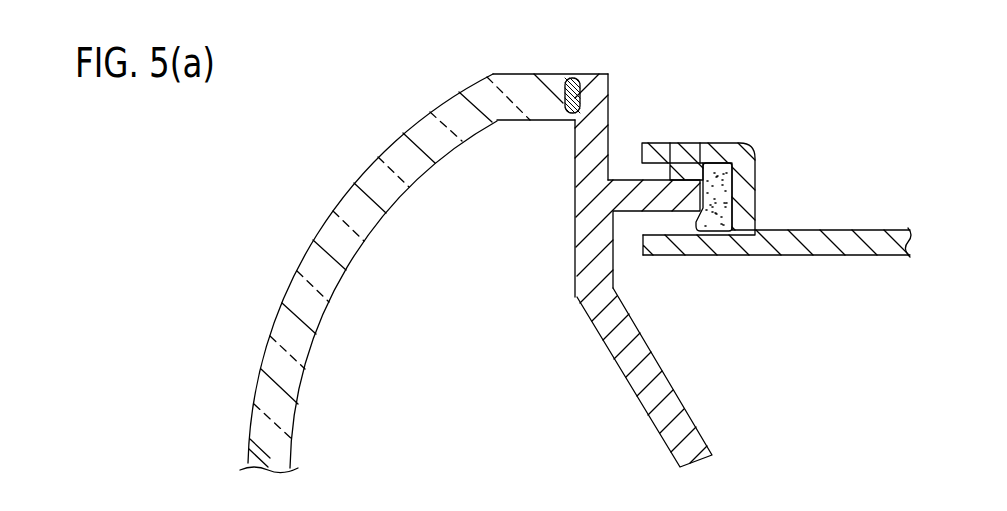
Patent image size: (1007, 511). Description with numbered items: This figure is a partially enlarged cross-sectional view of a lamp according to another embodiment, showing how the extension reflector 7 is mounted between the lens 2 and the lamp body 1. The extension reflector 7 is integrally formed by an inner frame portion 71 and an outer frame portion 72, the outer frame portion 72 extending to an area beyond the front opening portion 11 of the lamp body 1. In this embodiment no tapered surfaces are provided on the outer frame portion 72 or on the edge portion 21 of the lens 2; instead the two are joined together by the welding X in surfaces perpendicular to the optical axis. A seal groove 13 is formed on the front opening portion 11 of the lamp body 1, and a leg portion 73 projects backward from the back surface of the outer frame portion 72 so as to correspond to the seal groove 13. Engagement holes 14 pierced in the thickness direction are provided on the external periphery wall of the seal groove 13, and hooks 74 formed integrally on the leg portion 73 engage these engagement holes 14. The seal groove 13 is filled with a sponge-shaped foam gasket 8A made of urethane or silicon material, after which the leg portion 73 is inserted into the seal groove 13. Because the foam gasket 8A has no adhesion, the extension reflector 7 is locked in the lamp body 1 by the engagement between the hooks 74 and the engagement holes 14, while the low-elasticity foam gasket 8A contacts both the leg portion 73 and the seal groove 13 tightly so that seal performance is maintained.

The lamp body 1 is at (777, 269).
The front opening portion 11 is at (647, 258).
The seal groove 13 is at (730, 154).
The engagement holes 14 is at (674, 143).
The lens 2 is at (300, 292).
The edge portion 21 is at (500, 80).
The extension reflector 7 is at (685, 252).
The inner frame portion 71 is at (657, 411).
The outer frame portion 72 is at (611, 115).
The leg portion 73 is at (683, 198).
The hooks 74 is at (683, 163).
The foam gasket 8A is at (714, 234).
The welding X is at (561, 80).